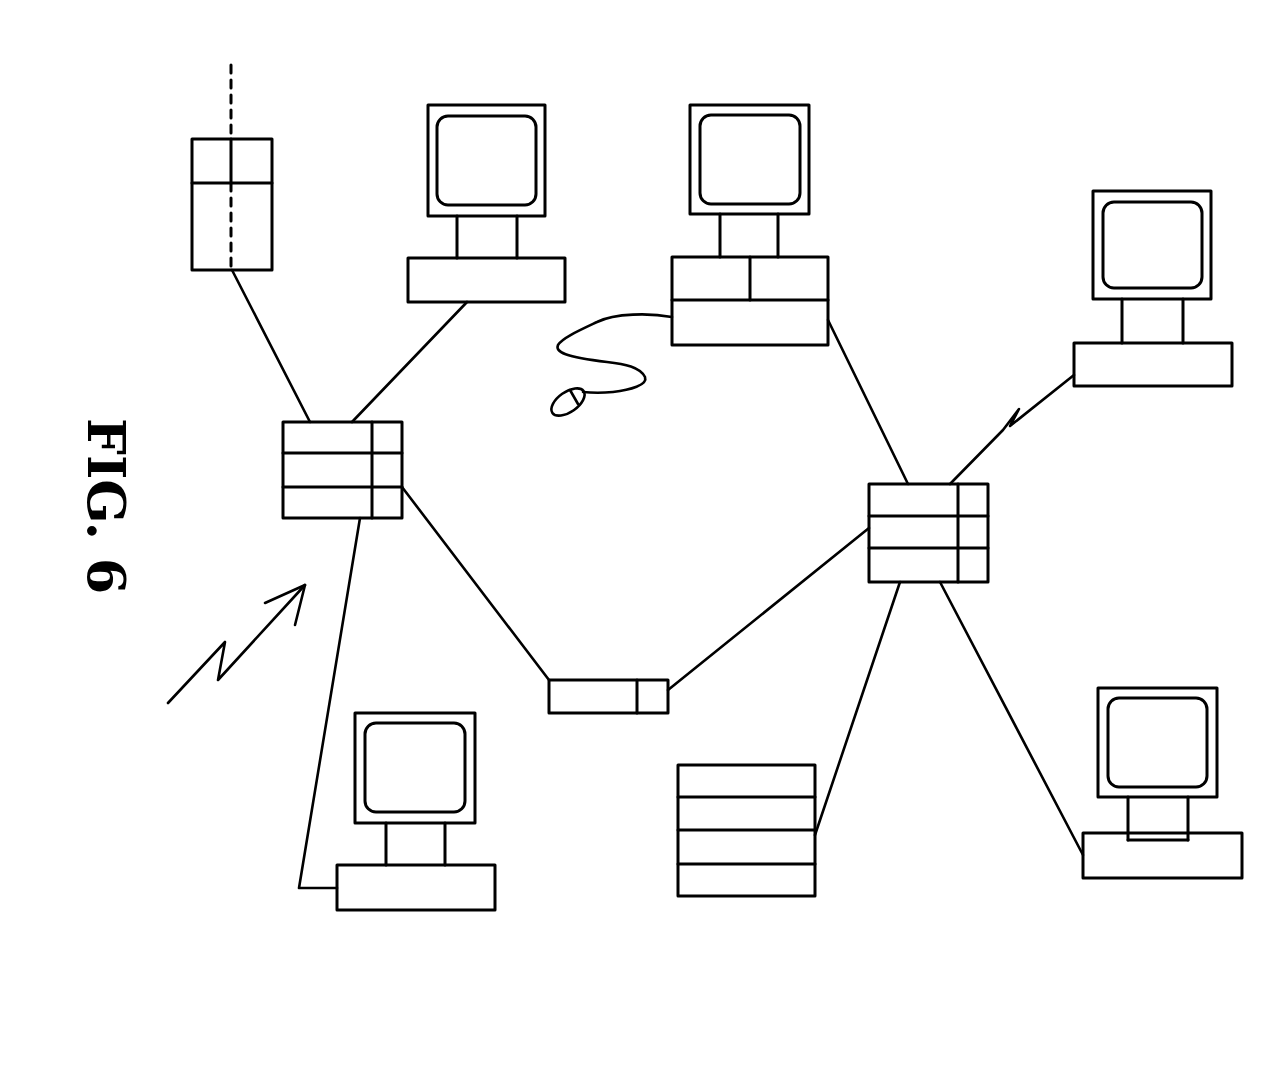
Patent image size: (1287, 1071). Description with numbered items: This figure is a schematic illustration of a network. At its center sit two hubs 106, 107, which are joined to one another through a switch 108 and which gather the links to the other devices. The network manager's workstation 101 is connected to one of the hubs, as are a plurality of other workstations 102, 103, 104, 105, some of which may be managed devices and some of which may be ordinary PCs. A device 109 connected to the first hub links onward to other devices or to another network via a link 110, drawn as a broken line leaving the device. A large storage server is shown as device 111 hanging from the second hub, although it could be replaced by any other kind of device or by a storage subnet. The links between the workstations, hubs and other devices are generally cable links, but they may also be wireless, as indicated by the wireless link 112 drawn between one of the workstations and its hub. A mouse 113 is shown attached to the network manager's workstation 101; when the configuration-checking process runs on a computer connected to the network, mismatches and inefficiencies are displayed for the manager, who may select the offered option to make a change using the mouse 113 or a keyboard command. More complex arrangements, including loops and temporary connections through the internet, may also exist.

The network manager's workstation 101 is at (809, 140).
The workstation 102 is at (1211, 240).
The workstation 103 is at (1217, 750).
The workstation 104 is at (475, 776).
The workstation 105 is at (545, 140).
The hub 106 is at (402, 472).
The hub 107 is at (988, 532).
The switch 108 is at (605, 680).
The device 109 is at (272, 208).
The link 110 is at (236, 114).
The large storage server 111 is at (815, 872).
The wireless link 112 is at (1032, 408).
The mouse 113 is at (576, 413).